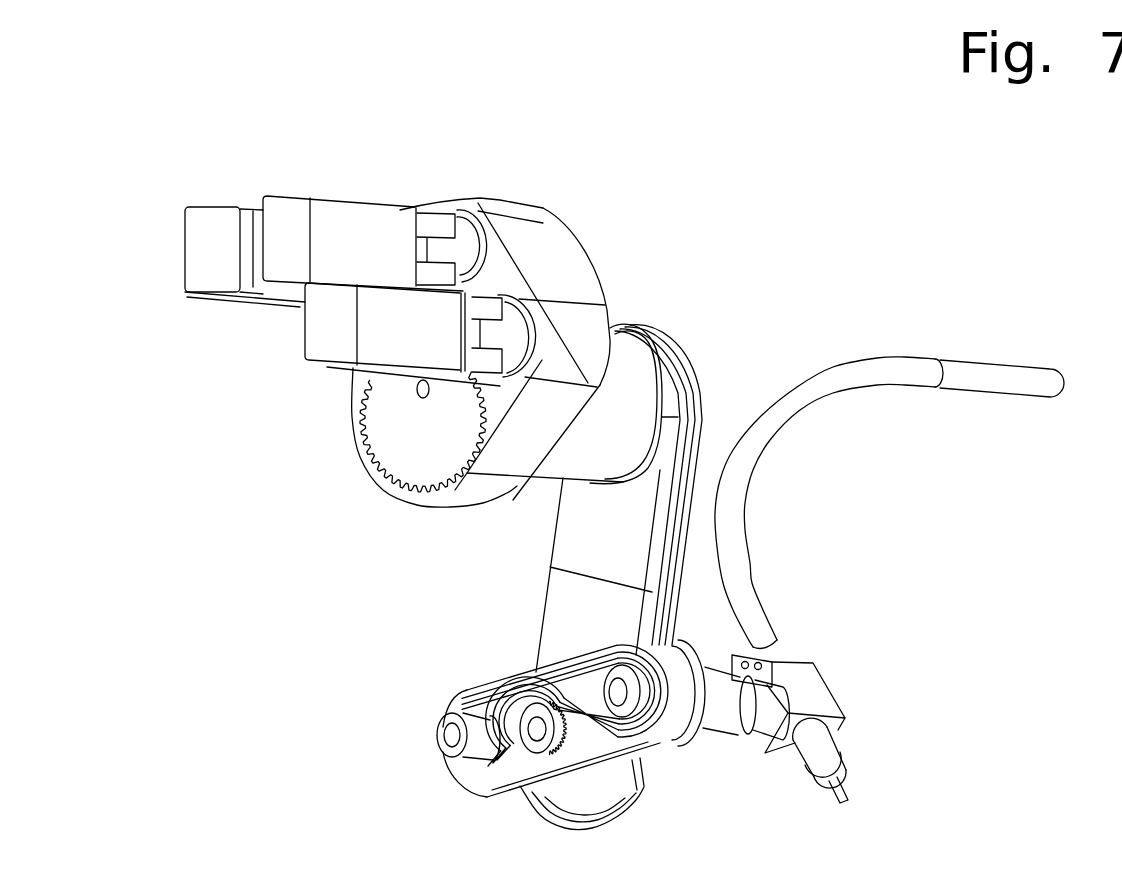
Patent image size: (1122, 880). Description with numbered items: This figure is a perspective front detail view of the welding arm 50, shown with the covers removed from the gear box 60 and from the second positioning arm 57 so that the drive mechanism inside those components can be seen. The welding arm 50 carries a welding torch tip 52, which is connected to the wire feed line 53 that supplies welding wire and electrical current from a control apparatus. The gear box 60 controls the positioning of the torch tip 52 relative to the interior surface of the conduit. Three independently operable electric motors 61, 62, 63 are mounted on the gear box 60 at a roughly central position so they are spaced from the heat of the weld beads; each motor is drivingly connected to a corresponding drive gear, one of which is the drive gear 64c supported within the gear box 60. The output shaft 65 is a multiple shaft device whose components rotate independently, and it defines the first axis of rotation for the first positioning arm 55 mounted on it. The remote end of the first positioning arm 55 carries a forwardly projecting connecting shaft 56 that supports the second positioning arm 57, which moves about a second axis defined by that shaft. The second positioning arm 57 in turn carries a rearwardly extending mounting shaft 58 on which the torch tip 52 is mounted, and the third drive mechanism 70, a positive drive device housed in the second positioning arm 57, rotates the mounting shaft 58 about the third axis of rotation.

The welding arm 50 is at (628, 172).
The welding torch tip 52 is at (817, 762).
The wire feed line 53 is at (923, 372).
The first positioning arm 55 is at (632, 538).
The connecting shaft 56 is at (548, 790).
The second positioning arm 57 is at (602, 738).
The mounting shaft 58 is at (718, 685).
The gear box 60 is at (552, 260).
The electric motor 61 is at (333, 345).
The electric motor 62 is at (300, 207).
The electric motor 63 is at (202, 270).
The drive gear 64c is at (415, 458).
The output shaft 65 is at (623, 368).
The third drive mechanism 70 is at (510, 688).